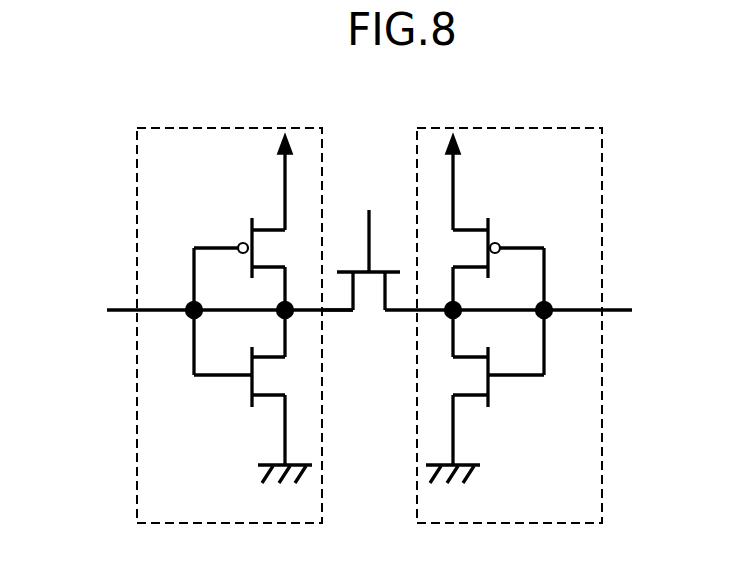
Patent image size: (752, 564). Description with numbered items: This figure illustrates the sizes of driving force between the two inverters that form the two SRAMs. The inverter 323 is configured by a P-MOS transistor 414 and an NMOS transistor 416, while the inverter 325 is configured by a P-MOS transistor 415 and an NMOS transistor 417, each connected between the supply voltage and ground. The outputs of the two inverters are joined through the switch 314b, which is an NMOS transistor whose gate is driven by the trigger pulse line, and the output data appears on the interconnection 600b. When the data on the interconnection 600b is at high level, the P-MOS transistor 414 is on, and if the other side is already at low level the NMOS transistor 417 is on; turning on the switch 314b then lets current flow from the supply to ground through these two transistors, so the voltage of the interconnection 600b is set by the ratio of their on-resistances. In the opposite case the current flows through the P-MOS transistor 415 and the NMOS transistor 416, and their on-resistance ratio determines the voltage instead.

The inverter 323 is at (187, 311).
The inverter 325 is at (554, 311).
The P-MOS transistor 414 is at (239, 242).
The P-MOS transistor 415 is at (499, 242).
The NMOS transistor 416 is at (245, 388).
The NMOS transistor 417 is at (493, 388).
The interconnection 600b is at (328, 308).
The switch 314b is at (369, 318).